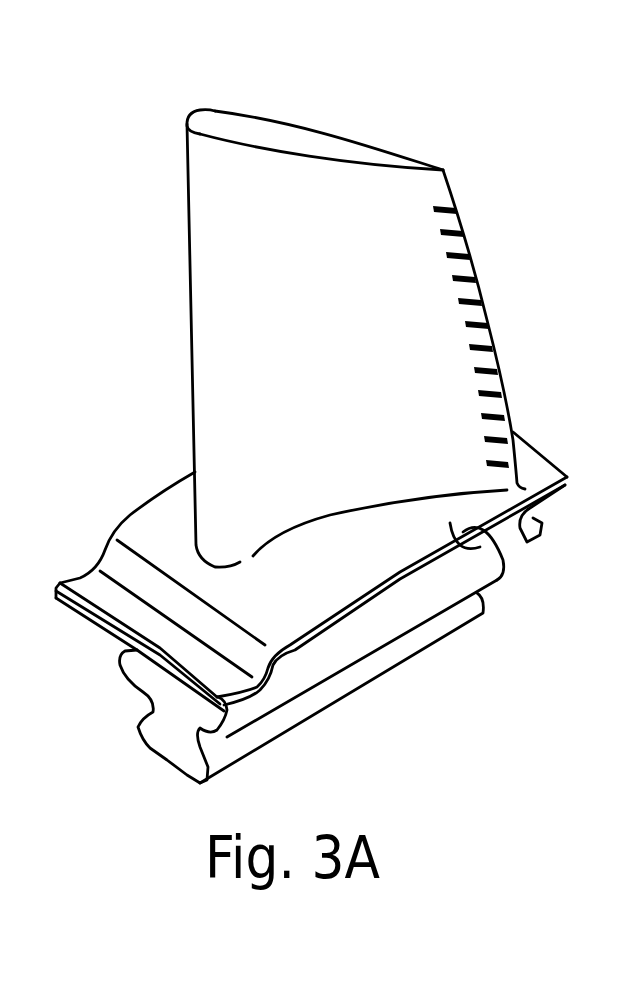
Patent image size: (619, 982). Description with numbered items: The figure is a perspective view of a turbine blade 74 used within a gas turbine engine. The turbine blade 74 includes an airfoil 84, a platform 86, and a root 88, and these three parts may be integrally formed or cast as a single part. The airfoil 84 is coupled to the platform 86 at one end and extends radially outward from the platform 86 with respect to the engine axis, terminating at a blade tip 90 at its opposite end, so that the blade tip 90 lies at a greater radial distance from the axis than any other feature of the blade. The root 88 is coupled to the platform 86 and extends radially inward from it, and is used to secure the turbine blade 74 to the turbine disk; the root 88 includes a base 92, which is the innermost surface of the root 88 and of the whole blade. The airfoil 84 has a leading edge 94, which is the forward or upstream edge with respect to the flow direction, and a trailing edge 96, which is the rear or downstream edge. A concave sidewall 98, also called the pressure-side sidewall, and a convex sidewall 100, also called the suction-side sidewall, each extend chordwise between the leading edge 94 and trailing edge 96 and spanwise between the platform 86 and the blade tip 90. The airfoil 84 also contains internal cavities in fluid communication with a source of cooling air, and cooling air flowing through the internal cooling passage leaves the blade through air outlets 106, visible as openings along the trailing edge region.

The turbine blade 74 is at (111, 180).
The airfoil 84 is at (212, 402).
The platform 86 is at (498, 575).
The root 88 is at (443, 630).
The blade tip 90 is at (196, 121).
The base 92 is at (173, 760).
The leading edge 94 is at (191, 316).
The trailing edge 96 is at (466, 232).
The concave sidewall 98 is at (410, 344).
The convex sidewall 100 is at (279, 104).
The air outlets 106 is at (507, 397).